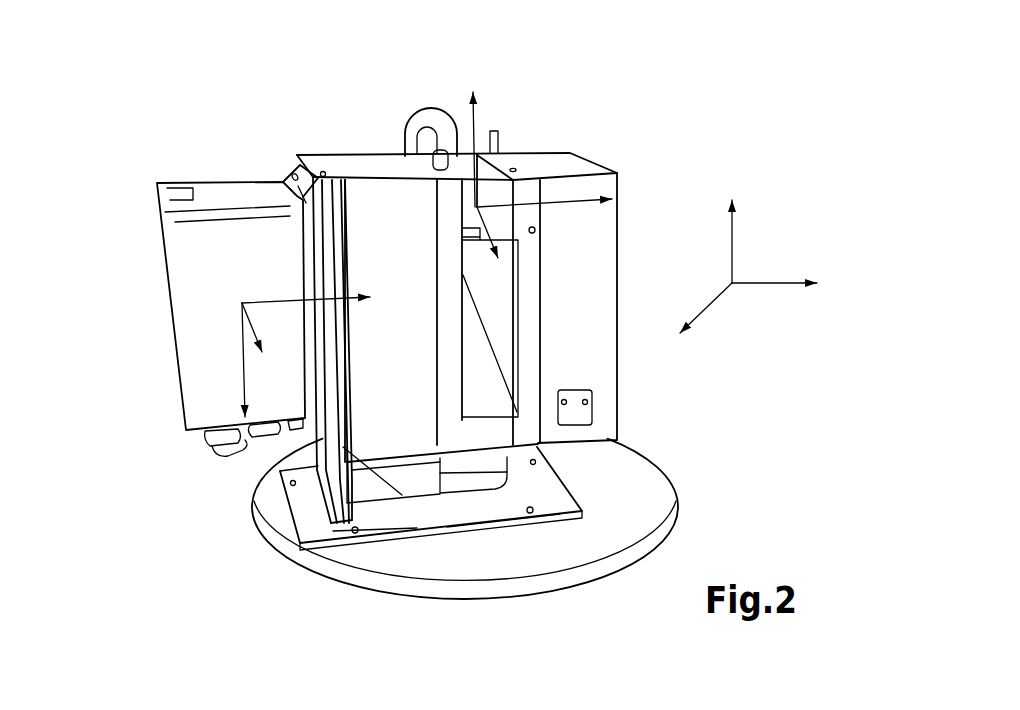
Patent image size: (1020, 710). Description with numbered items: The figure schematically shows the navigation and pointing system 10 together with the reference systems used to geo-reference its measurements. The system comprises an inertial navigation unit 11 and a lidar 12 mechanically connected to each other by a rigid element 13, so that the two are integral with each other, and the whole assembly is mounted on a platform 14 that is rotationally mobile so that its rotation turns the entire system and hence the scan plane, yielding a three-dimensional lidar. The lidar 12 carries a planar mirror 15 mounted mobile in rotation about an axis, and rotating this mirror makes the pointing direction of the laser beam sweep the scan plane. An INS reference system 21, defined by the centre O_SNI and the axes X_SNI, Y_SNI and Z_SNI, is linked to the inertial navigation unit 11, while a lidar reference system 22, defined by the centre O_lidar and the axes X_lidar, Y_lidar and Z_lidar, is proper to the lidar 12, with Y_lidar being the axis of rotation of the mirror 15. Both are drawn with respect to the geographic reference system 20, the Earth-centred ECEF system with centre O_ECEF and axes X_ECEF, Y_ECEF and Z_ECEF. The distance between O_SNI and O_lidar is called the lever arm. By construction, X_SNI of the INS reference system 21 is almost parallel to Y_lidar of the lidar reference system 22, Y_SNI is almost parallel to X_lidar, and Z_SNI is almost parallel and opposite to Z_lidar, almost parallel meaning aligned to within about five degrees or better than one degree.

The navigation and pointing system 10 is at (200, 488).
The inertial navigation unit 11 is at (247, 237).
The lidar 12 is at (600, 396).
The rigid element 13 is at (340, 508).
The platform 14 is at (658, 500).
The planar mirror 15 is at (466, 187).
The geographic reference system 20 is at (754, 342).
The INS reference system 21 is at (242, 303).
The lidar reference system 22 is at (577, 197).